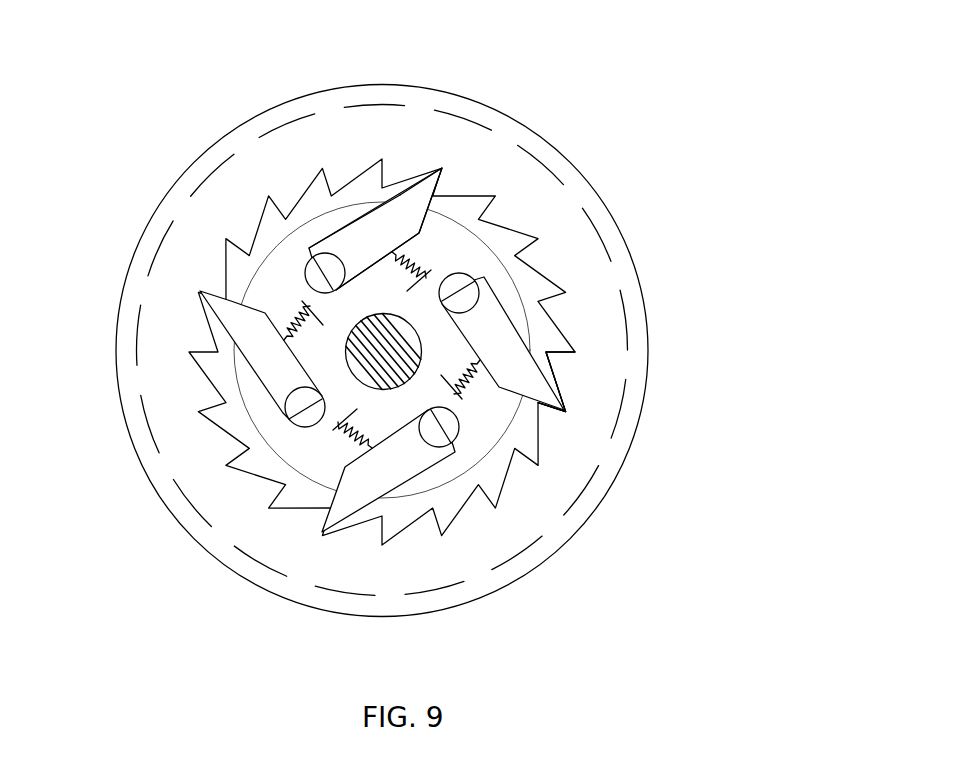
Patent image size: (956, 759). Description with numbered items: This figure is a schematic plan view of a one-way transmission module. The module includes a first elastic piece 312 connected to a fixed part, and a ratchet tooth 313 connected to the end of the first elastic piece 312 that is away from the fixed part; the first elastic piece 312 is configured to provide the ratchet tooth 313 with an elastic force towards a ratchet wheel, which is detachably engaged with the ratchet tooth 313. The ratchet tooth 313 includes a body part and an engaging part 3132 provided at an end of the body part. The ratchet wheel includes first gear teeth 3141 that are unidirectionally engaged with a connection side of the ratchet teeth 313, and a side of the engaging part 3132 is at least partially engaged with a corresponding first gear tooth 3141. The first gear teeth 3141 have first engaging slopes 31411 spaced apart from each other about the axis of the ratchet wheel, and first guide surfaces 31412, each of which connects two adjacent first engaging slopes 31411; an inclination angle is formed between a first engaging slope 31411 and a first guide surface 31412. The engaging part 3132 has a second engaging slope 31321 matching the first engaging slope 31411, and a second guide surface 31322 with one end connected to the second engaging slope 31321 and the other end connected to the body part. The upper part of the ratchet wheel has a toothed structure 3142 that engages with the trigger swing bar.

The first elastic piece 312 is at (305, 332).
The ratchet tooth 313 is at (253, 369).
The engaging part 3132 is at (656, 18).
The second engaging slope 31321 is at (438, 198).
The second guide surface 31322 is at (443, 168).
The first gear teeth 3141 is at (748, 432).
The first engaging slopes 31411 is at (565, 409).
The first guide surfaces 31412 is at (555, 385).
The toothed structure 3142 is at (210, 528).